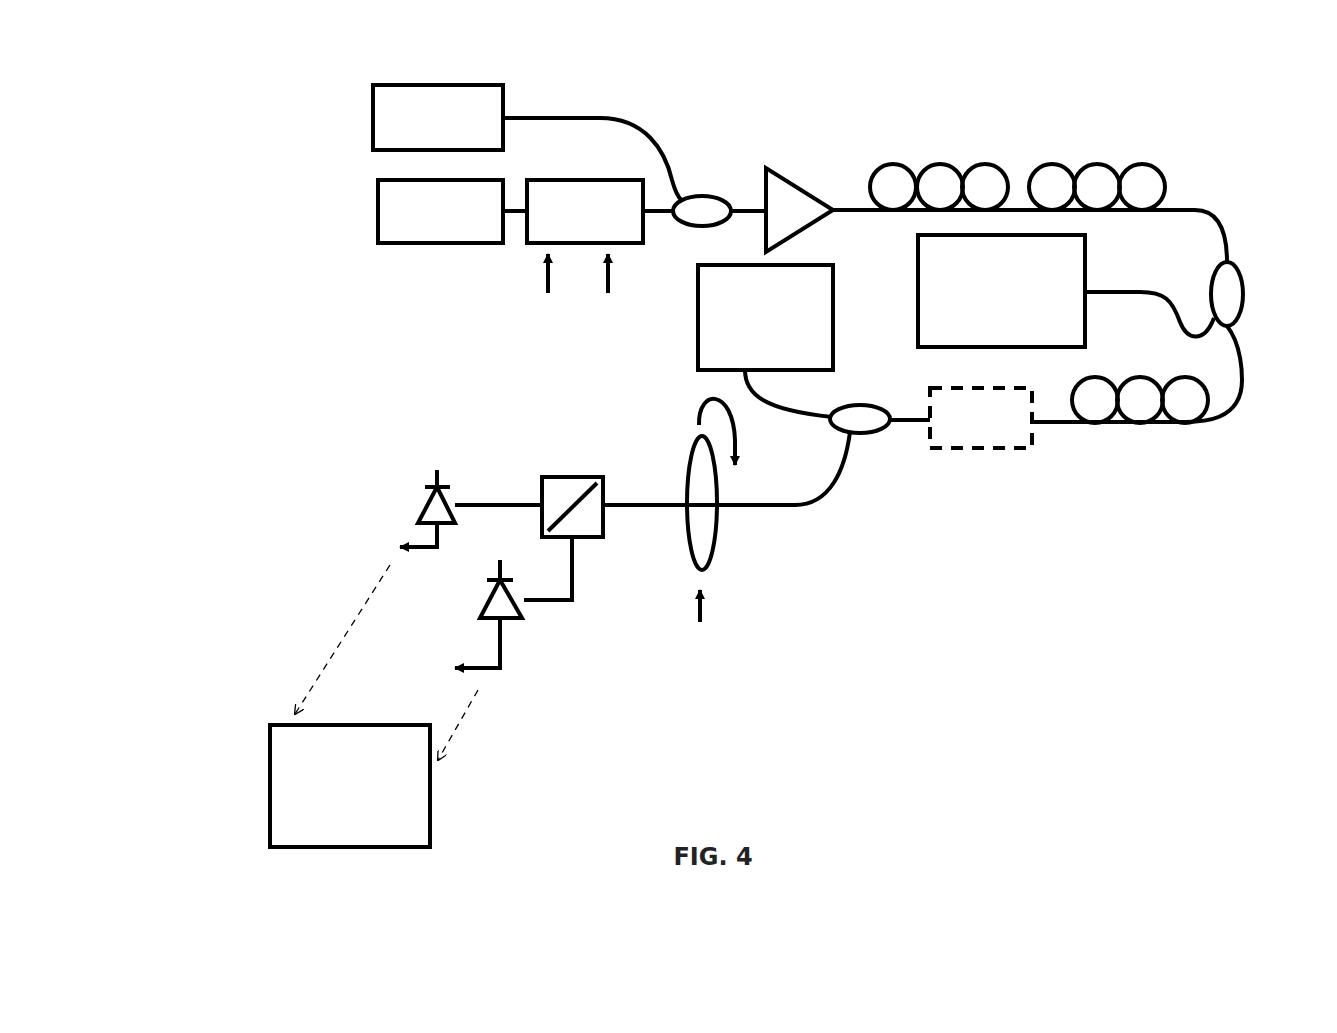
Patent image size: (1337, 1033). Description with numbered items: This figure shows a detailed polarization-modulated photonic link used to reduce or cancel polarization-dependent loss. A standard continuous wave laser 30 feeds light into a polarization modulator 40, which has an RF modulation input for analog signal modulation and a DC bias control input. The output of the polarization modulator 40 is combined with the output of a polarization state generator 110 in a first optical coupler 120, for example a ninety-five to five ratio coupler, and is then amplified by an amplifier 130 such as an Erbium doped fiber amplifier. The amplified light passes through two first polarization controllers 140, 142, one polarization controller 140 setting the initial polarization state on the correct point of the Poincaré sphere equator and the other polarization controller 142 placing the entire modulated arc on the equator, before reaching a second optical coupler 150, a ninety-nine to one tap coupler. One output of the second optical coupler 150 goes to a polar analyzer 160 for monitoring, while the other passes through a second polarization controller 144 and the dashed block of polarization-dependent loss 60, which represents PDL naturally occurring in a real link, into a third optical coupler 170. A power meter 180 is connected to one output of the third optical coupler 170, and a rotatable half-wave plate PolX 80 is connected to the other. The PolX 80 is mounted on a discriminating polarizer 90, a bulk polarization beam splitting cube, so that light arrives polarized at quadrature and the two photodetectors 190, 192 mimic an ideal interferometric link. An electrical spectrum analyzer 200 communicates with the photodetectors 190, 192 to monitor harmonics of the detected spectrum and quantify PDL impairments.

The polarization state generator 110 is at (393, 152).
The continuous wave laser 30 is at (390, 247).
The polarization modulator 40 is at (523, 247).
The first optical coupler 120 is at (716, 195).
The amplifier 130 is at (793, 177).
The first polarization controller 140 is at (982, 187).
The first polarization controller 142 is at (1140, 187).
The second optical coupler 150 is at (1243, 300).
The polar analyzer 160 is at (1048, 345).
The second polarization controller 144 is at (1183, 396).
The polarization-dependent loss 60 is at (987, 455).
The third optical coupler 170 is at (867, 435).
The power meter 180 is at (767, 372).
The PolX 80 is at (714, 540).
The discriminating polarizer 90 is at (590, 530).
The photodetector 190 is at (423, 506).
The photodetector 192 is at (512, 620).
The electrical spectrum analyzer 200 is at (268, 758).